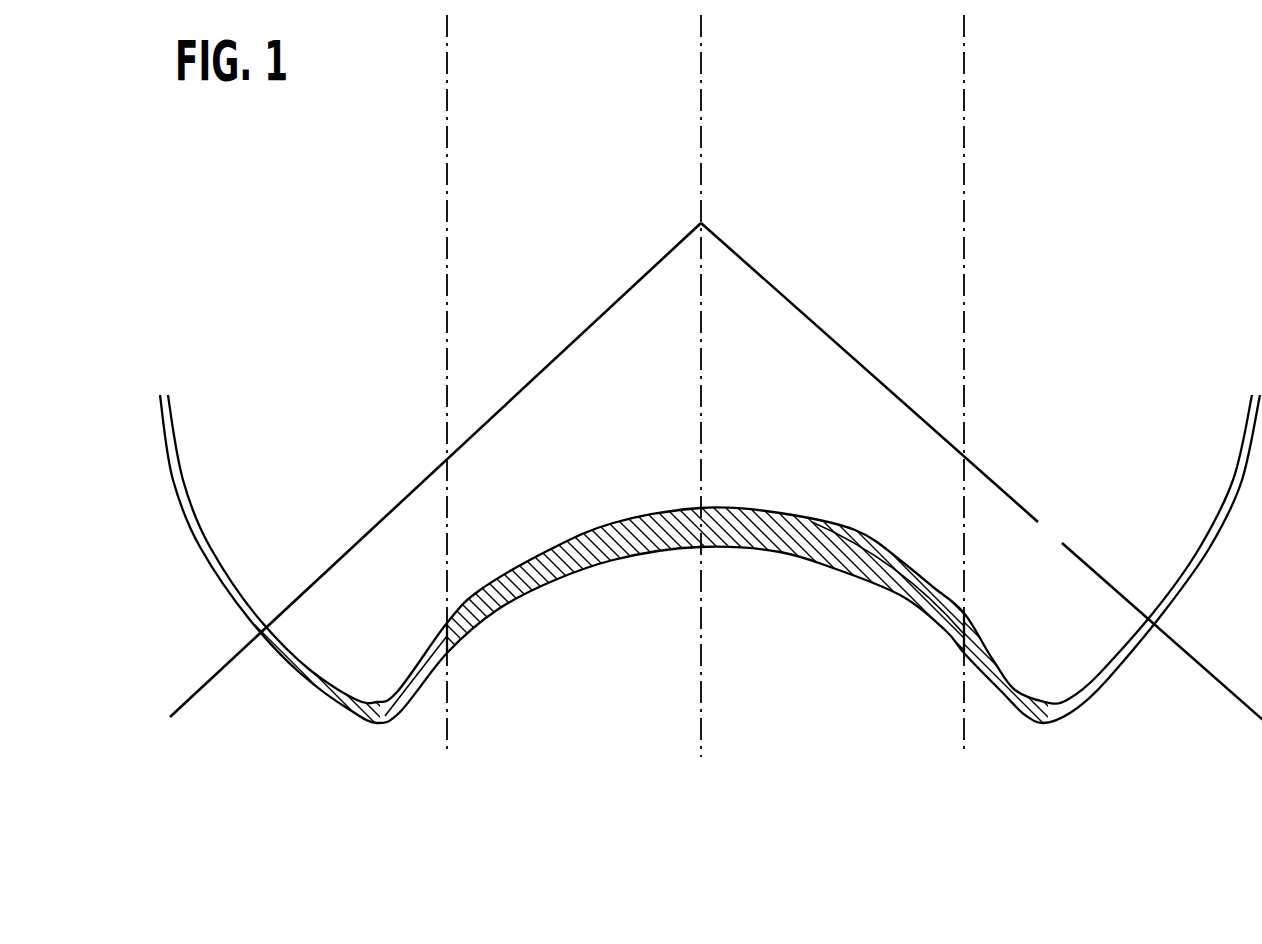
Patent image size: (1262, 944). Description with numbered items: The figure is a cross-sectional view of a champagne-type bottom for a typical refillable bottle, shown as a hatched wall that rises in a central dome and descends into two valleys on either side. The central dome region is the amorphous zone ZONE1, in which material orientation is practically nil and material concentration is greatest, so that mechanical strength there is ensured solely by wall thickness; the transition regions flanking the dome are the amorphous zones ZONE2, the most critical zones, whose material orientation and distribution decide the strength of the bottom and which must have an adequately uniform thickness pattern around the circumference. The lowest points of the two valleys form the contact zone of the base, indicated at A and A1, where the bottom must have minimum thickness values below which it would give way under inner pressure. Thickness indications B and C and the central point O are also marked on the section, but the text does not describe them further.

The amorphous zone 1 ZONE1 is at (850, 360).
The amorphous zone 2 ZONE2 is at (437, 597).
The contact zone point of the base A is at (375, 655).
The contact zone point of the base A1 is at (1045, 655).
The wall thickness at outer arc portion B is at (855, 498).
The wall thickness at transition portion C is at (950, 637).
The point O on inner surface at center axis O is at (700, 547).